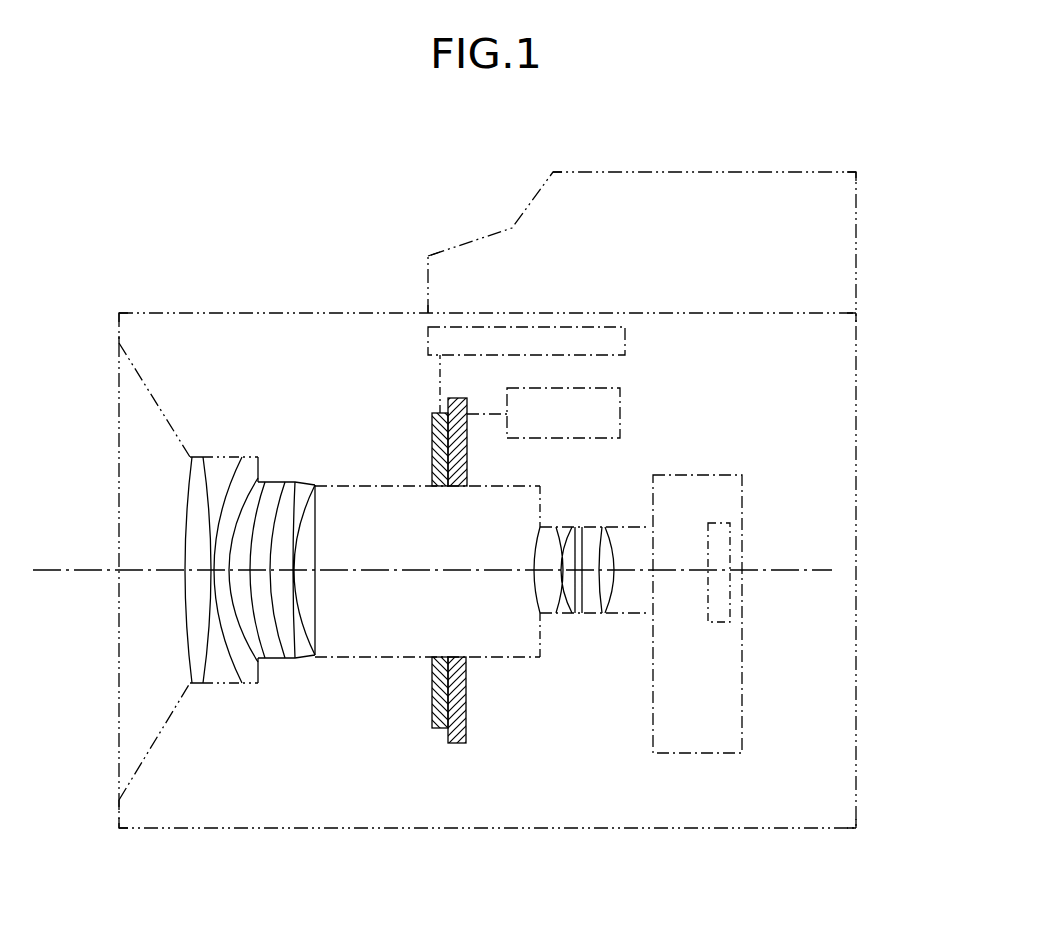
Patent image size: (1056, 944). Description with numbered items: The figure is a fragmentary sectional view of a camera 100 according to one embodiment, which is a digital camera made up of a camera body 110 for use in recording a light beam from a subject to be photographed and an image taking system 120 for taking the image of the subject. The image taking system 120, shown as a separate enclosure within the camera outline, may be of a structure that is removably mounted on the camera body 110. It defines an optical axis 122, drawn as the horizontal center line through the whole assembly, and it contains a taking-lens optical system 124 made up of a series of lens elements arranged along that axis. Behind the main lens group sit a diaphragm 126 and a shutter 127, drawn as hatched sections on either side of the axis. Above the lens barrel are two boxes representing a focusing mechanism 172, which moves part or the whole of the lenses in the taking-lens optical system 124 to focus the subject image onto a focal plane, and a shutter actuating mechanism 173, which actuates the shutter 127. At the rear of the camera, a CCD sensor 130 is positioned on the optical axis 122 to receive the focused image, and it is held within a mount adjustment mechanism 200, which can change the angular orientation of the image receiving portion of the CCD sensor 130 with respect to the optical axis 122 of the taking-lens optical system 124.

The camera 100 is at (571, 450).
The camera body 110 is at (645, 162).
The image taking system 120 is at (268, 303).
The optical axis 122 is at (59, 560).
The taking-lens optical system 124 is at (160, 633).
The diaphragm 126 is at (458, 736).
The shutter 127 is at (438, 440).
The CCD sensor 130 is at (718, 548).
The focusing mechanism 172 is at (612, 423).
The shutter actuating mechanism 173 is at (615, 342).
The mount adjustment mechanism 200 is at (723, 680).